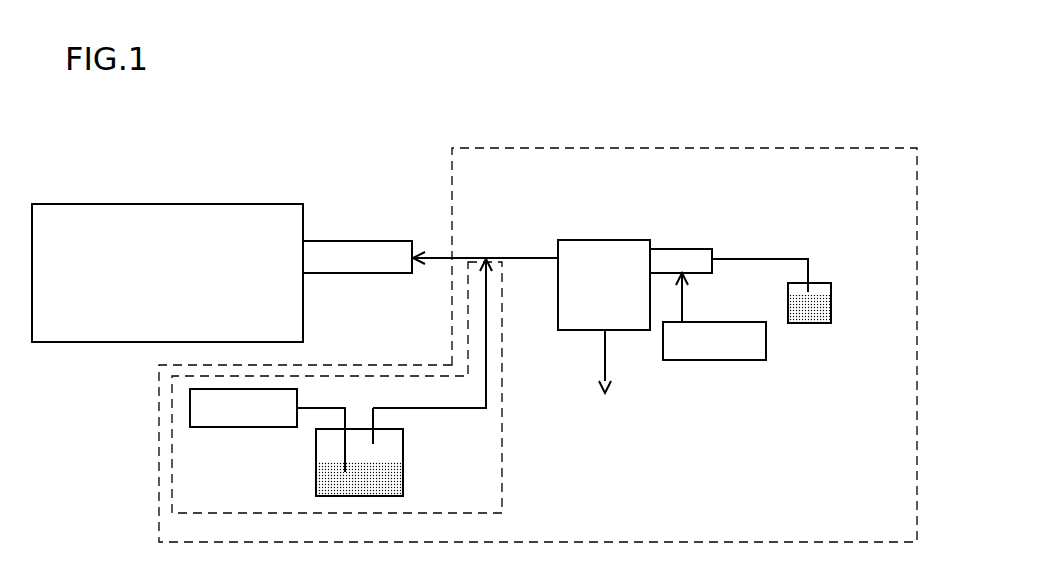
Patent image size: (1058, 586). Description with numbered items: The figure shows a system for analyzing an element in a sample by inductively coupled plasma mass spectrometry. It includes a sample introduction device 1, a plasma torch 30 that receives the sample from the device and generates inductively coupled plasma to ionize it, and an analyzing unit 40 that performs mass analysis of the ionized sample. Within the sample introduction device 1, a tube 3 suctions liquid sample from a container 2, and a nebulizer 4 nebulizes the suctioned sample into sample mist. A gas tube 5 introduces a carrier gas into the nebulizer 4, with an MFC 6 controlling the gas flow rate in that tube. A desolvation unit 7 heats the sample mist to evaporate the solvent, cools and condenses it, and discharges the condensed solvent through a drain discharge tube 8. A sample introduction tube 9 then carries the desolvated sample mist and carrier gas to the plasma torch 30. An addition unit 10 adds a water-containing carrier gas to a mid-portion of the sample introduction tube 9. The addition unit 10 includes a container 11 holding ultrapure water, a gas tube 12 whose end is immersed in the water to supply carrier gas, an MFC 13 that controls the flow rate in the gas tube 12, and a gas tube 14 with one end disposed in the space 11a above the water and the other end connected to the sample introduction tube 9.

The sample introduction device 1 is at (838, 148).
The container 2 is at (831, 305).
The tube 3 is at (790, 259).
The nebulizer 4 is at (688, 249).
The gas tube 5 is at (684, 303).
The MFC 6 is at (713, 360).
The desolvation unit 7 is at (625, 240).
The drain discharge tube 8 is at (605, 368).
The sample introduction tube 9 is at (512, 258).
The addition unit 10 is at (502, 475).
The container 11 is at (403, 468).
The space 11a is at (390, 448).
The gas tube 12 is at (312, 408).
The MFC 13 is at (240, 427).
The gas tube 14 is at (487, 356).
The plasma torch 30 is at (355, 241).
The analyzing unit 40 is at (170, 204).